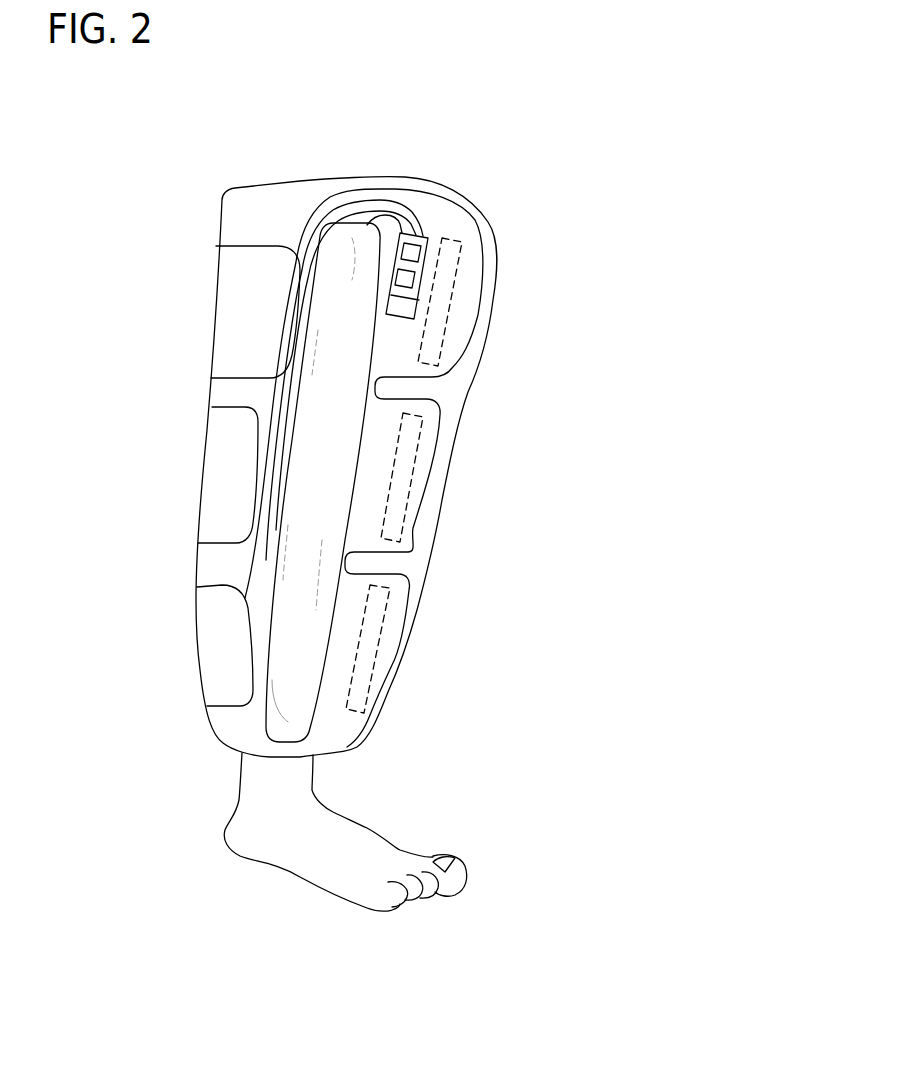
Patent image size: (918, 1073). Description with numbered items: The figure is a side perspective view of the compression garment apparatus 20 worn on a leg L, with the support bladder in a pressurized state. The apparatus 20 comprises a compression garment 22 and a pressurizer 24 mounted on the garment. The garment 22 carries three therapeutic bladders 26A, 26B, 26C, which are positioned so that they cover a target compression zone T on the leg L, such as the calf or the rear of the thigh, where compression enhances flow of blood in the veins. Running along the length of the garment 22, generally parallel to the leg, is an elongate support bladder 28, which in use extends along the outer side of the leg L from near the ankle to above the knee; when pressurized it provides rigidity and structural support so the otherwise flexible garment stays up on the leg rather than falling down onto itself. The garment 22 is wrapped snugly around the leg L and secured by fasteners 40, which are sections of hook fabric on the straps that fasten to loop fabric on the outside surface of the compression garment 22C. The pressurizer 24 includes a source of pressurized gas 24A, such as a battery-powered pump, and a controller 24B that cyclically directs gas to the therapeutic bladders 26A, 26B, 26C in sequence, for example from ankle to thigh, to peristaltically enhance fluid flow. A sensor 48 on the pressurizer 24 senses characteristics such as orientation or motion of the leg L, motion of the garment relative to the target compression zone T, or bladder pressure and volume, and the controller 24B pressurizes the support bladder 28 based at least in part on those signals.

The compression garment apparatus 20 is at (138, 178).
The compression garment 22 is at (512, 224).
The outside surface of the compression garment 22C is at (447, 393).
The pressurizer 24 is at (436, 225).
The source of pressurized gas 24A is at (398, 309).
The controller 24B is at (406, 279).
The therapeutic bladder 26A is at (217, 650).
The therapeutic bladder 26B is at (227, 480).
The therapeutic bladder 26C is at (237, 302).
The support bladder 28 is at (276, 727).
The fastener 40 is at (443, 350).
The sensor 48 is at (412, 254).
The leg L is at (64, 334).
The target compression zone T is at (80, 385).